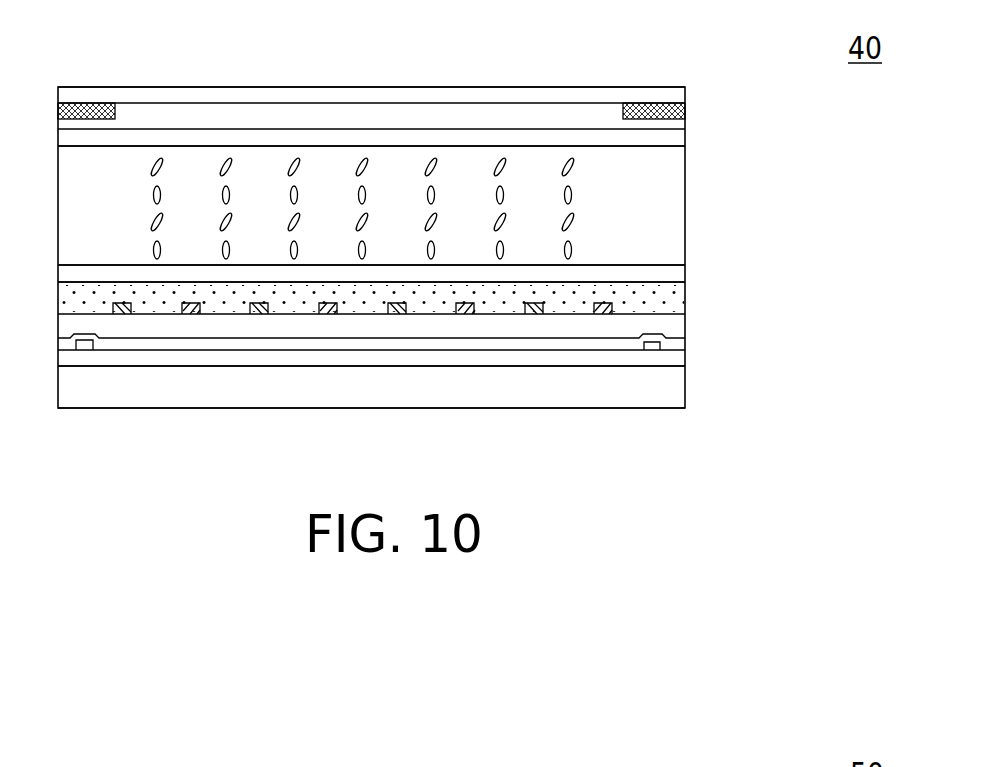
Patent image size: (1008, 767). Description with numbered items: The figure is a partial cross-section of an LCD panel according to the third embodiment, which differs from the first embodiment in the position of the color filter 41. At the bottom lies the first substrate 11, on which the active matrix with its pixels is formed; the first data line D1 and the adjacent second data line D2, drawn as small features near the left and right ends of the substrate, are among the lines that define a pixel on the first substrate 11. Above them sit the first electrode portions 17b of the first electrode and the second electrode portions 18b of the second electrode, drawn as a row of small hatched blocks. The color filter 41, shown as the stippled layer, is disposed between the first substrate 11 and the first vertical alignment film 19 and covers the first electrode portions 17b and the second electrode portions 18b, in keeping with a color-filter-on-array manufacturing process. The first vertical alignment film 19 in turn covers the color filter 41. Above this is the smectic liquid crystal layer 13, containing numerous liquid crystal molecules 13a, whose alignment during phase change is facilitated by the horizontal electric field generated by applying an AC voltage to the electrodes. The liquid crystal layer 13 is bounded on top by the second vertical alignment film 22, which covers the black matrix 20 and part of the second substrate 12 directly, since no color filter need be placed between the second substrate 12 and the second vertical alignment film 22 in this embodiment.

The second substrate 12 is at (675, 95).
The black matrix 20 is at (686, 113).
The second vertical alignment film 22 is at (675, 138).
The smectic liquid crystal layer 13 is at (675, 196).
The liquid crystal molecules 13a is at (572, 226).
The first vertical alignment film 19 is at (670, 279).
The color filter 41 is at (673, 302).
The second electrode portions 18b is at (614, 309).
The first electrode portions 17b is at (537, 314).
The first substrate 11 is at (670, 388).
The first data line D1 is at (85, 345).
The second data line D2 is at (652, 350).